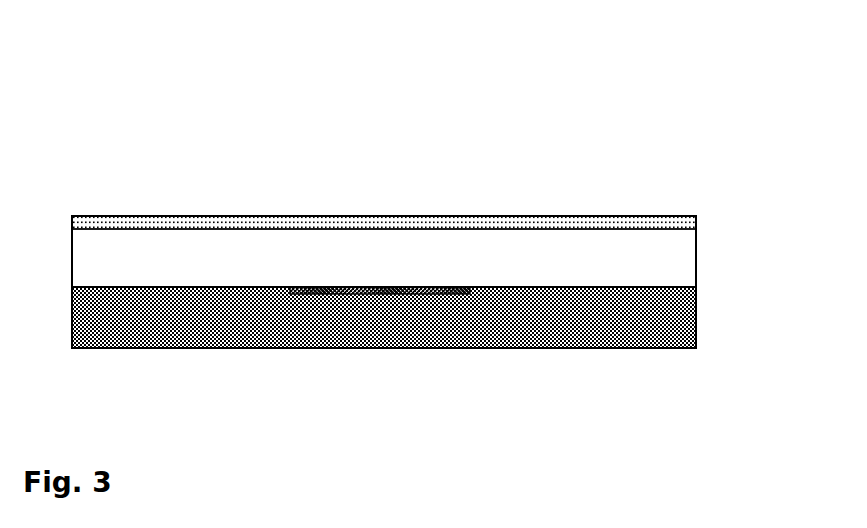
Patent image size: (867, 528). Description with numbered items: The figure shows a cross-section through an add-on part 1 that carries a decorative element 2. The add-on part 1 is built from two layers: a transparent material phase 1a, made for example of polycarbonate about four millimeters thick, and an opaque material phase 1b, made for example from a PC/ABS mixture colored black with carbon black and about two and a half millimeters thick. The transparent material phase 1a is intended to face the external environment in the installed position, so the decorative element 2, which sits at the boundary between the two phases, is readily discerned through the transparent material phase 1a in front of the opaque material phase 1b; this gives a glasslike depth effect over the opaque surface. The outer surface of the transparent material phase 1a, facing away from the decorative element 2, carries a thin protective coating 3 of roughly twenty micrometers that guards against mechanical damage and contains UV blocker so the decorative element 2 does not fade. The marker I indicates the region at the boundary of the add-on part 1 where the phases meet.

The add-on part 1 is at (137, 132).
The transparent material phase 1a is at (680, 265).
The opaque material phase 1b is at (678, 317).
The decorative element 2 is at (447, 286).
The protective coating 3 is at (519, 226).
The interface I is at (112, 287).